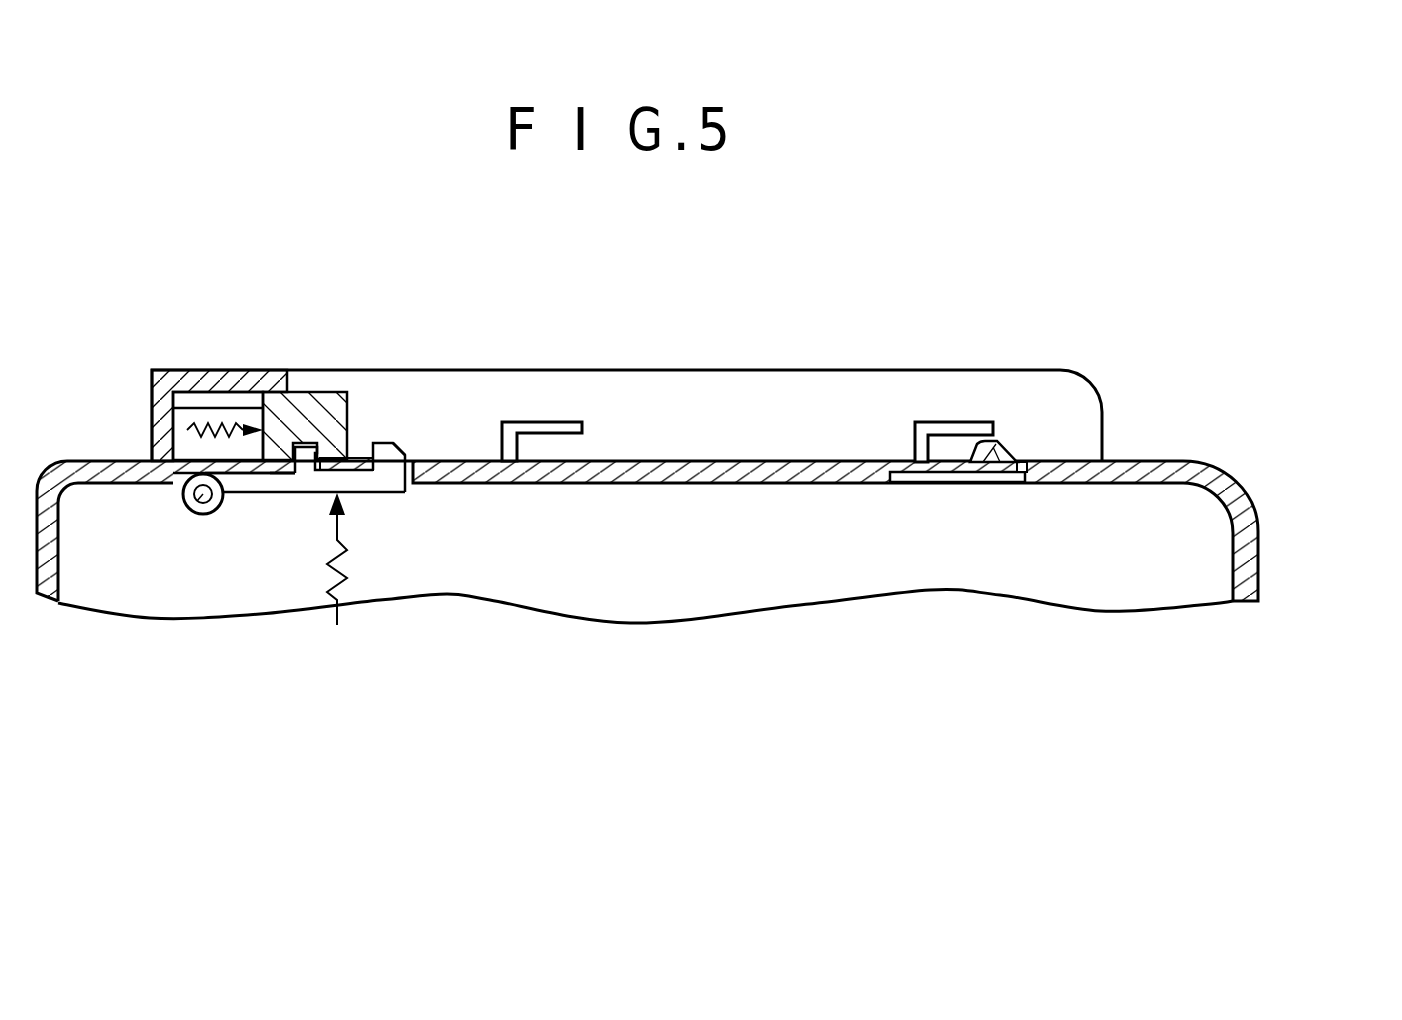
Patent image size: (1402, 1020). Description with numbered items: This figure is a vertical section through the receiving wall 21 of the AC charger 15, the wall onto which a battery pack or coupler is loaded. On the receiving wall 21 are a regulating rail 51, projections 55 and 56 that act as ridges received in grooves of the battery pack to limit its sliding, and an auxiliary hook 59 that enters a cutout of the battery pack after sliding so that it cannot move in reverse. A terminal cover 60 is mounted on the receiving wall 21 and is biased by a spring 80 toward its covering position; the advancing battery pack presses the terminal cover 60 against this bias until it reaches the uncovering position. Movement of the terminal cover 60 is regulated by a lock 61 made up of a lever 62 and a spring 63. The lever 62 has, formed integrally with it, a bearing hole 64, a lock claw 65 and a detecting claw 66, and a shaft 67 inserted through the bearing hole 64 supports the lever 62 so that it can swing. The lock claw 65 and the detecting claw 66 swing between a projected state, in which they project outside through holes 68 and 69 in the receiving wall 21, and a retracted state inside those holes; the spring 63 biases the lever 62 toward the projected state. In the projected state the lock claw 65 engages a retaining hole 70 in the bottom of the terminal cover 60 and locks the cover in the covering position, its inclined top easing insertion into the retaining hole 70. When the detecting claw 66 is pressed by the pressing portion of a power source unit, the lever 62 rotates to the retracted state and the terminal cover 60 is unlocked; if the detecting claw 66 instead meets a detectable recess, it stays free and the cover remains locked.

The AC charger 15 is at (1275, 543).
The receiving wall 21 is at (695, 460).
The regulating rail 51 is at (260, 368).
The projection 55 is at (563, 422).
The projection 56 is at (940, 422).
The auxiliary hook 59 is at (988, 468).
The terminal cover 60 is at (333, 392).
The lock 61 is at (354, 522).
The lever 62 is at (379, 497).
The spring 63 is at (352, 568).
The bearing hole 64 is at (183, 493).
The lock claw 65 is at (307, 452).
The detecting claw 66 is at (380, 452).
The shaft 67 is at (195, 510).
The through hole 68 is at (278, 475).
The through hole 69 is at (425, 460).
The retaining hole 70 is at (305, 442).
The spring 80 is at (220, 428).